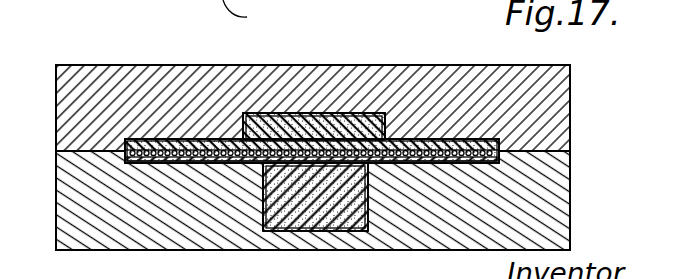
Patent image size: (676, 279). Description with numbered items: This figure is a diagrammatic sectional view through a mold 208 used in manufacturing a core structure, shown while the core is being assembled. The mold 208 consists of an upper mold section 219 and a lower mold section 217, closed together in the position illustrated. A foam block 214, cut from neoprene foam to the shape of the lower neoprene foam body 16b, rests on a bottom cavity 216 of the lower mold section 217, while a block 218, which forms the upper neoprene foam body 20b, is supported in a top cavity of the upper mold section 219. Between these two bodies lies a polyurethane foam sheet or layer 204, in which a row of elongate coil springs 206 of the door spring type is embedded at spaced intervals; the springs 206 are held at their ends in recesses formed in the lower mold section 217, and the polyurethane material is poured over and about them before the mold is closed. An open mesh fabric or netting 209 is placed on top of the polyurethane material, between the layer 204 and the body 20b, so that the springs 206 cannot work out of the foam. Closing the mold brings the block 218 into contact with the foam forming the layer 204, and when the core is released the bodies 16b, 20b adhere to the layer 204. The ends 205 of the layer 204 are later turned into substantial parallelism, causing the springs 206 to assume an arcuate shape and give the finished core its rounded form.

The upper mold section 219 is at (112, 78).
The mold 208 is at (75, 198).
The lower mold section 217 is at (122, 236).
The upper neoprene foam body 20b is at (322, 114).
The block 218 is at (358, 113).
The polyurethane foam sheet or layer 204 is at (452, 138).
The coil springs 206 is at (193, 164).
The open mesh fabric or netting 209 is at (143, 138).
The foam block 214 is at (296, 206).
The lower neoprene foam body 16b is at (340, 206).
The bottom cavity 216 is at (263, 202).
The ends 205 is at (254, 14).